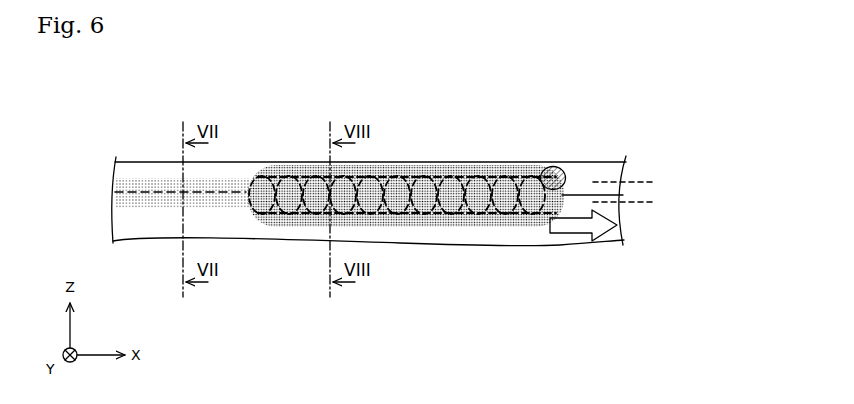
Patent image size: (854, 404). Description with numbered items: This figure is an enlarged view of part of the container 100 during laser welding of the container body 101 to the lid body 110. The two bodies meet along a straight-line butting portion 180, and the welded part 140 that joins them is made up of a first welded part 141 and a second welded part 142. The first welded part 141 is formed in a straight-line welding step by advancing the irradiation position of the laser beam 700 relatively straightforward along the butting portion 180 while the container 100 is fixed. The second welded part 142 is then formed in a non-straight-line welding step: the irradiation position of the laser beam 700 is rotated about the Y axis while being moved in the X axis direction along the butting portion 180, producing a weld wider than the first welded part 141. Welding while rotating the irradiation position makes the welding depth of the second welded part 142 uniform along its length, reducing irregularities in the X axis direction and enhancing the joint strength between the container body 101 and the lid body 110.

The container 100 is at (408, 198).
The container body 101 is at (166, 226).
The lid body 110 is at (252, 161).
The welded part 140 is at (369, 205).
The first welded part 141 is at (229, 201).
The second welded part 142 is at (455, 228).
The butting portion 180 is at (660, 178).
The laser beam 700 is at (555, 166).